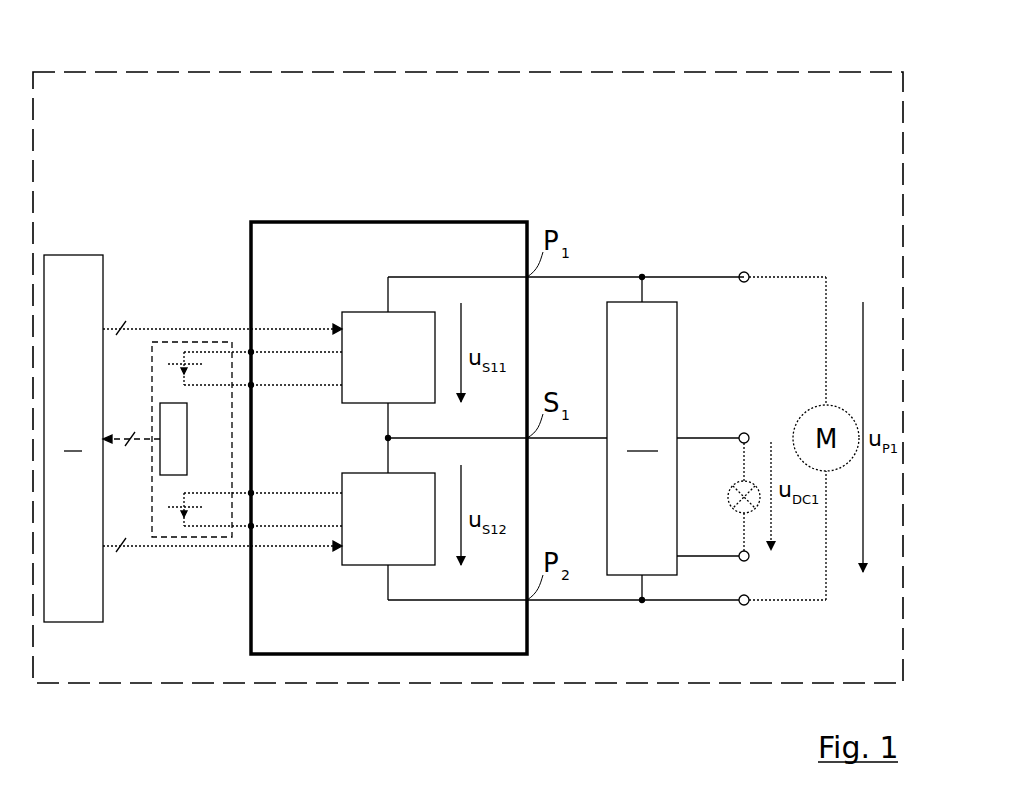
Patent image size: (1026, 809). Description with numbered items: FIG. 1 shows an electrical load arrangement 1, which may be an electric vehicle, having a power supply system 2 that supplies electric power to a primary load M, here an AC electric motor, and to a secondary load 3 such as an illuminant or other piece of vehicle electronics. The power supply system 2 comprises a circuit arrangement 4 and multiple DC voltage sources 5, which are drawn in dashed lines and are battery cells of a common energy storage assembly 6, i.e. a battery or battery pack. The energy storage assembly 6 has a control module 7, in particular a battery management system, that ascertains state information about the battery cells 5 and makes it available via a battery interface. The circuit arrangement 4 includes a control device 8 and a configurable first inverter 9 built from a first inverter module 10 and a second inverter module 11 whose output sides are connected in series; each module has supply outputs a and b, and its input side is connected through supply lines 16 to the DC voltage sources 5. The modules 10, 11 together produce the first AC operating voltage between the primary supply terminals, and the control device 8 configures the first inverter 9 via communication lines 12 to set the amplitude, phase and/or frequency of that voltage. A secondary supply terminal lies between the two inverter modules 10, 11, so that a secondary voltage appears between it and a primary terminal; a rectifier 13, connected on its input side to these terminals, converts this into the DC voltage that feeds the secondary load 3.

The electrical load arrangement 1 is at (552, 72).
The power supply system 2 is at (113, 140).
The secondary load 3 is at (729, 490).
The circuit arrangement 4 is at (201, 170).
The DC voltage sources 5 is at (200, 393).
The energy storage assembly 6 is at (194, 340).
The control module 7 is at (160, 468).
The control device 8 is at (73, 438).
The first inverter 9 is at (385, 222).
The first inverter module 10 is at (354, 311).
The second inverter module 11 is at (356, 567).
The communication lines 12 is at (147, 326).
The rectifier 13 is at (673, 438).
The supply lines 16 is at (318, 356).